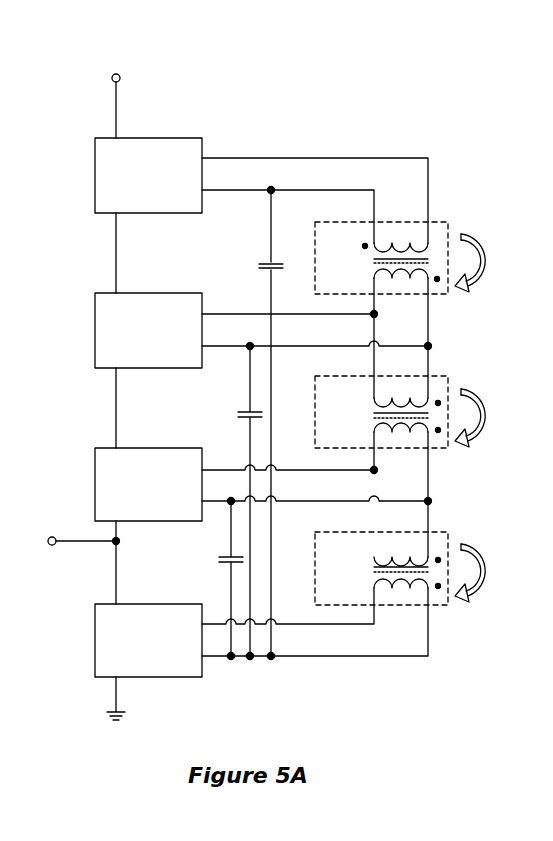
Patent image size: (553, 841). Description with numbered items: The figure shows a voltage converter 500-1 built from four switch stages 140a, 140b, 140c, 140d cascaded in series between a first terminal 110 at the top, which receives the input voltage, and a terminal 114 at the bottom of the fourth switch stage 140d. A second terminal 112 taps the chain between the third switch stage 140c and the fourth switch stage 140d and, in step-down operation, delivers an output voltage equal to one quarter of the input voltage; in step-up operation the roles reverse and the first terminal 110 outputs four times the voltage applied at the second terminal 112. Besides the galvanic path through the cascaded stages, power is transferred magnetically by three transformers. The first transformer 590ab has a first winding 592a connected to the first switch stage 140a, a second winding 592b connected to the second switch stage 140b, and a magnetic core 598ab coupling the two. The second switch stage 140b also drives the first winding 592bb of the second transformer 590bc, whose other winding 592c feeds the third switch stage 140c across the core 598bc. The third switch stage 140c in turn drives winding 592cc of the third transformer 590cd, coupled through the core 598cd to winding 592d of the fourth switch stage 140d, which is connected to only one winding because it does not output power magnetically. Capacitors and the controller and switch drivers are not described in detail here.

The voltage converter 500-1 is at (426, 70).
The first terminal 110 is at (113, 96).
The second terminal 112 is at (80, 525).
The ground terminal 114 is at (104, 698).
The first switch stage 140a is at (148, 165).
The second switch stage 140b is at (148, 321).
The third switch stage 140c is at (148, 474).
The fourth switch stage 140d is at (148, 630).
The first transformer 590ab is at (381, 248).
The first winding 592a is at (377, 241).
The magnetic core 598ab is at (376, 263).
The second winding 592b is at (383, 281).
The second transformer 590bc is at (381, 403).
The first winding 592bb is at (383, 395).
The magnetic core BC 598bc is at (376, 417).
The winding 592c is at (384, 435).
The third transformer 590cd is at (381, 559).
The winding 592cc is at (383, 553).
The magnetic core CD 598cd is at (376, 572).
The winding 592d is at (384, 591).